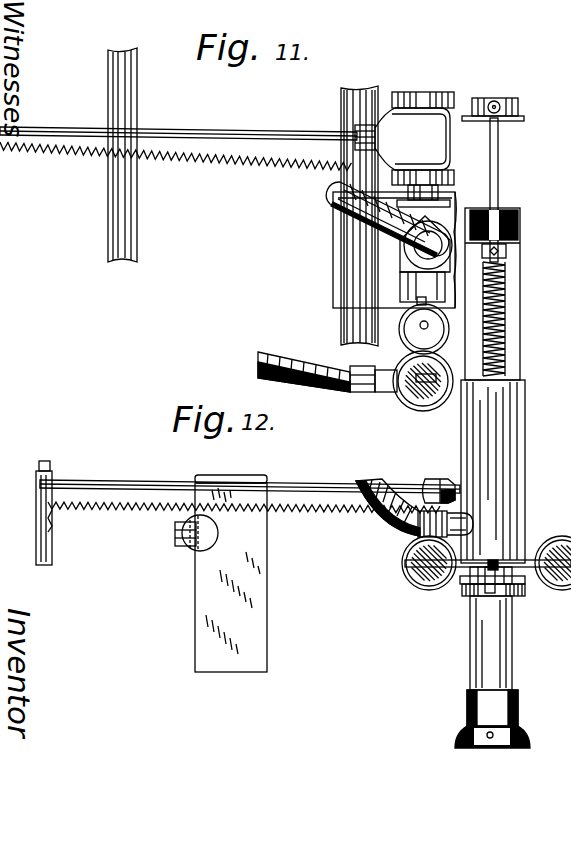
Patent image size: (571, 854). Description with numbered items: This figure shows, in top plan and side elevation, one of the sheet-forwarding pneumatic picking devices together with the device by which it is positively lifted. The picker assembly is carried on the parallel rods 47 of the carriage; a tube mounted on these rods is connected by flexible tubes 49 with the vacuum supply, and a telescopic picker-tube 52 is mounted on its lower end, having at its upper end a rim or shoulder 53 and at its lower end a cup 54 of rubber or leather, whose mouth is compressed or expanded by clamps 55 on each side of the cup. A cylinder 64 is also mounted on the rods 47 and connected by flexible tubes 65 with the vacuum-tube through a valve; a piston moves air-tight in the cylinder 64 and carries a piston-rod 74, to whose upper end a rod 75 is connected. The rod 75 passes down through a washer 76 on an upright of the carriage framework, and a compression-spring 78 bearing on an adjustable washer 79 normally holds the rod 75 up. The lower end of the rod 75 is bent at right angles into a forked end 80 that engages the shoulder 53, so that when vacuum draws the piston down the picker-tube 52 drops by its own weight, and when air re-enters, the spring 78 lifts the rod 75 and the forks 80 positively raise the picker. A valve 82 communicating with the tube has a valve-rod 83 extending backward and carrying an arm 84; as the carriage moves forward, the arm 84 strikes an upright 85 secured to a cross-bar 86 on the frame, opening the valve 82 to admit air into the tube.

In FIG. 11, the rods 47 is at (340, 318).
In FIG. 12, the rods 47 is at (568, 530).
In FIG. 11, the flexible tubes 49 is at (355, 215).
In FIG. 12, the telescopic picker-tubes 52 is at (490, 648).
In FIG. 12, the rims or shoulders 53 is at (476, 588).
In FIG. 12, the cups 54 is at (497, 708).
In FIG. 12, the clamps 55 is at (484, 740).
In FIG. 11, the cylinders 64 is at (418, 406).
In FIG. 11, the flexible tubes 65 is at (312, 392).
In FIG. 12, the flexible tubes 65 is at (385, 490).
In FIG. 11, the piston-rod 74 is at (421, 326).
In FIG. 11, the rod 75 is at (500, 193).
In FIG. 11, the washer 76 is at (518, 228).
In FIG. 11, the compression-spring 78 is at (500, 308).
In FIG. 11, the adjustable washer 79 is at (508, 252).
In FIG. 12, the forked end 80 is at (528, 594).
In FIG. 11, the valve 82 is at (404, 149).
In FIG. 11, the valve-rod 83 is at (197, 135).
In FIG. 12, the arm 84 is at (50, 478).
In FIG. 11, the upright 85 is at (123, 201).
In FIG. 12, the upright 85 is at (193, 550).
In FIG. 12, the cross-bar 86 is at (231, 573).